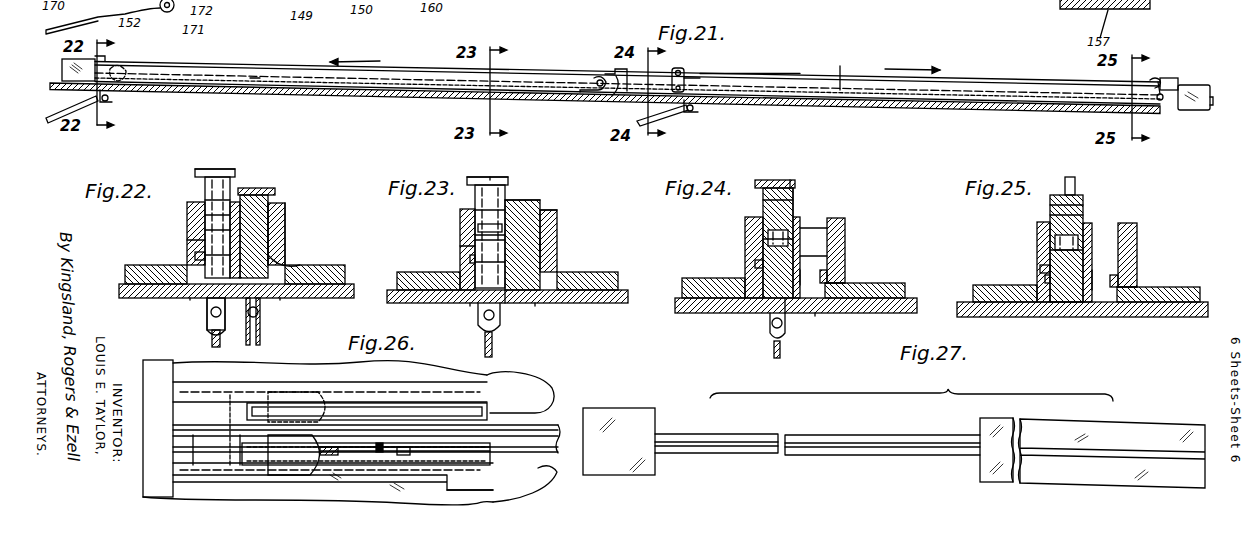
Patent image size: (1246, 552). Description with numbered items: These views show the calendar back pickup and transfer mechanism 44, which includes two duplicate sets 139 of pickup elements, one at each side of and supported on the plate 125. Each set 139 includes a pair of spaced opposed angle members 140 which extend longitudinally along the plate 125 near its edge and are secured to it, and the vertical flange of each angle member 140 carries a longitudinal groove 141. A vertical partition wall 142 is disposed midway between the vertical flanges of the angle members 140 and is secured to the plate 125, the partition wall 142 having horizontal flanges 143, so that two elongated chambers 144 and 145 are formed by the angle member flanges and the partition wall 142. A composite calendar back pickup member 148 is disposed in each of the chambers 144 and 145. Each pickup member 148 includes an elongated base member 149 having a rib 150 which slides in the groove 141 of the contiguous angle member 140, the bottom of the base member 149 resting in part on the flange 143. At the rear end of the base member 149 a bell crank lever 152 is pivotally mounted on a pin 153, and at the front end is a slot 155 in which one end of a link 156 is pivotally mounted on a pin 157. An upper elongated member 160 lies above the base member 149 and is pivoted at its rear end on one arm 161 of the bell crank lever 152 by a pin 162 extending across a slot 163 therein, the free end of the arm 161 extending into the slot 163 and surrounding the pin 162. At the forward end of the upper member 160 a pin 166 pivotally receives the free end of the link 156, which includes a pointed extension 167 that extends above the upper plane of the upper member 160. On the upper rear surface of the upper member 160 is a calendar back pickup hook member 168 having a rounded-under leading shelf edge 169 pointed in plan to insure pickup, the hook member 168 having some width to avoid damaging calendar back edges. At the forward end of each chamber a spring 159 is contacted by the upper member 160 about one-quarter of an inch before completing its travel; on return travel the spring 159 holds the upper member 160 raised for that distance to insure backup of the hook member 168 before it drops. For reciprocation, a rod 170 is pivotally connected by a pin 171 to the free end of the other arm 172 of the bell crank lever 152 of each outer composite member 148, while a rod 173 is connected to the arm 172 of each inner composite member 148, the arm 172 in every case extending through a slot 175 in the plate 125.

In FIG. 21, the calendar back pickup and transfer mechanism 44 is at (1025, 67).
In FIG. 22, the calendar back pickup and transfer mechanism 44 is at (283, 175).
In FIG. 23, the calendar back pickup and transfer mechanism 44 is at (554, 203).
In FIG. 24, the calendar back pickup and transfer mechanism 44 is at (840, 188).
In FIG. 25, the calendar back pickup and transfer mechanism 44 is at (1118, 203).
In FIG. 26, the calendar back pickup and transfer mechanism 44 is at (562, 400).
In FIG. 22, the plate 125 is at (330, 298).
In FIG. 23, the plate 125 is at (628, 300).
In FIG. 24, the plate 125 is at (864, 315).
In FIG. 25, the plate 125 is at (1183, 318).
In FIG. 26, the plate 125 is at (154, 362).
In FIG. 21, the set of pickup elements 139 is at (779, 66).
In FIG. 22, the set of pickup elements 139 is at (289, 223).
In FIG. 23, the set of pickup elements 139 is at (530, 186).
In FIG. 24, the set of pickup elements 139 is at (804, 186).
In FIG. 21, the angle member 140 is at (957, 96).
In FIG. 22, the angle member 140 is at (187, 230).
In FIG. 23, the angle member 140 is at (398, 270).
In FIG. 24, the angle member 140 is at (704, 295).
In FIG. 25, the angle member 140 is at (1015, 304).
In FIG. 26, the angle member 140 is at (173, 490).
In FIG. 22, the longitudinal groove 141 is at (190, 257).
In FIG. 23, the longitudinal groove 141 is at (550, 246).
In FIG. 24, the longitudinal groove 141 is at (758, 264).
In FIG. 25, the longitudinal groove 141 is at (1040, 268).
In FIG. 26, the longitudinal groove 141 is at (234, 462).
In FIG. 23, the vertical partition wall 142 is at (460, 212).
In FIG. 24, the vertical partition wall 142 is at (805, 220).
In FIG. 26, the vertical partition wall 142 is at (217, 425).
In FIG. 27, the vertical partition wall 142 is at (800, 446).
In FIG. 21, the horizontal flange 143 is at (253, 80).
In FIG. 23, the horizontal flange 143 is at (510, 305).
In FIG. 24, the horizontal flange 143 is at (790, 303).
In FIG. 25, the horizontal flange 143 is at (1065, 304).
In FIG. 26, the horizontal flange 143 is at (354, 427).
In FIG. 27, the horizontal flange 143 is at (865, 437).
In FIG. 22, the elongated chamber 144 is at (190, 219).
In FIG. 23, the elongated chamber 144 is at (462, 241).
In FIG. 24, the elongated chamber 144 is at (768, 239).
In FIG. 25, the elongated chamber 144 is at (1040, 251).
In FIG. 22, the elongated chamber 145 is at (287, 216).
In FIG. 24, the elongated chamber 145 is at (847, 243).
In FIG. 25, the elongated chamber 145 is at (1112, 250).
In FIG. 22, the composite calendar back pickup member 148 is at (200, 192).
In FIG. 23, the composite calendar back pickup member 148 is at (471, 196).
In FIG. 25, the composite calendar back pickup member 148 is at (1089, 196).
In FIG. 21, the elongated base member 149 is at (297, 78).
In FIG. 22, the elongated base member 149 is at (190, 241).
In FIG. 23, the elongated base member 149 is at (460, 246).
In FIG. 24, the elongated base member 149 is at (818, 257).
In FIG. 25, the elongated base member 149 is at (1040, 262).
In FIG. 26, the elongated base member 149 is at (212, 464).
In FIG. 22, the rib 150 is at (272, 262).
In FIG. 23, the rib 150 is at (470, 259).
In FIG. 25, the rib 150 is at (1040, 279).
In FIG. 26, the rib 150 is at (467, 478).
In FIG. 21, the bell crank lever 152 is at (107, 99).
In FIG. 22, the bell crank lever 152 is at (203, 304).
In FIG. 23, the bell crank lever 152 is at (484, 228).
In FIG. 24, the bell crank lever 152 is at (830, 228).
In FIG. 26, the bell crank lever 152 is at (403, 392).
In FIG. 21, the pin 153 is at (700, 78).
In FIG. 26, the pin 153 is at (355, 462).
In FIG. 21, the slot 155 is at (1130, 9).
In FIG. 21, the link 156 is at (600, 80).
In FIG. 25, the link 156 is at (1090, 240).
In FIG. 21, the pin 157 is at (592, 90).
In FIG. 24, the pin 157 is at (800, 273).
In FIG. 25, the pin 157 is at (1093, 285).
In FIG. 21, the spring 159 is at (1195, 85).
In FIG. 21, the upper elongated member 160 is at (974, 76).
In FIG. 22, the upper elongated member 160 is at (190, 205).
In FIG. 23, the upper elongated member 160 is at (487, 177).
In FIG. 24, the upper elongated member 160 is at (801, 196).
In FIG. 25, the upper elongated member 160 is at (1083, 200).
In FIG. 21, the arm 161 is at (688, 70).
In FIG. 23, the arm 161 is at (507, 188).
In FIG. 24, the arm 161 is at (772, 244).
In FIG. 26, the arm 161 is at (380, 444).
In FIG. 21, the pin 162 is at (120, 66).
In FIG. 22, the pin 162 is at (205, 177).
In FIG. 24, the pin 162 is at (763, 198).
In FIG. 26, the pin 162 is at (402, 488).
In FIG. 26, the slot 163 is at (412, 454).
In FIG. 21, the pin 166 is at (1160, 80).
In FIG. 25, the pin 166 is at (1052, 203).
In FIG. 21, the pointed extension 167 is at (613, 100).
In FIG. 25, the pointed extension 167 is at (1072, 172).
In FIG. 21, the calendar back pickup hook member 168 is at (95, 61).
In FIG. 22, the calendar back pickup hook member 168 is at (247, 195).
In FIG. 23, the calendar back pickup hook member 168 is at (470, 178).
In FIG. 24, the calendar back pickup hook member 168 is at (786, 180).
In FIG. 26, the calendar back pickup hook member 168 is at (295, 390).
In FIG. 21, the leading shelf edge 169 is at (100, 57).
In FIG. 22, the leading shelf edge 169 is at (225, 177).
In FIG. 23, the leading shelf edge 169 is at (498, 177).
In FIG. 24, the leading shelf edge 169 is at (793, 170).
In FIG. 21, the rod 170 is at (80, 106).
In FIG. 22, the rod 170 is at (262, 337).
In FIG. 21, the pin 171 is at (107, 101).
In FIG. 22, the pin 171 is at (207, 318).
In FIG. 23, the pin 171 is at (478, 320).
In FIG. 24, the pin 171 is at (770, 330).
In FIG. 22, the arm 172 is at (226, 322).
In FIG. 23, the arm 172 is at (480, 330).
In FIG. 24, the arm 172 is at (790, 336).
In FIG. 21, the rod 173 is at (672, 120).
In FIG. 22, the rod 173 is at (208, 343).
In FIG. 23, the rod 173 is at (494, 351).
In FIG. 24, the rod 173 is at (772, 354).
In FIG. 22, the slot 175 is at (192, 296).
In FIG. 23, the slot 175 is at (470, 300).
In FIG. 24, the slot 175 is at (818, 310).
In FIG. 26, the slot 175 is at (498, 412).